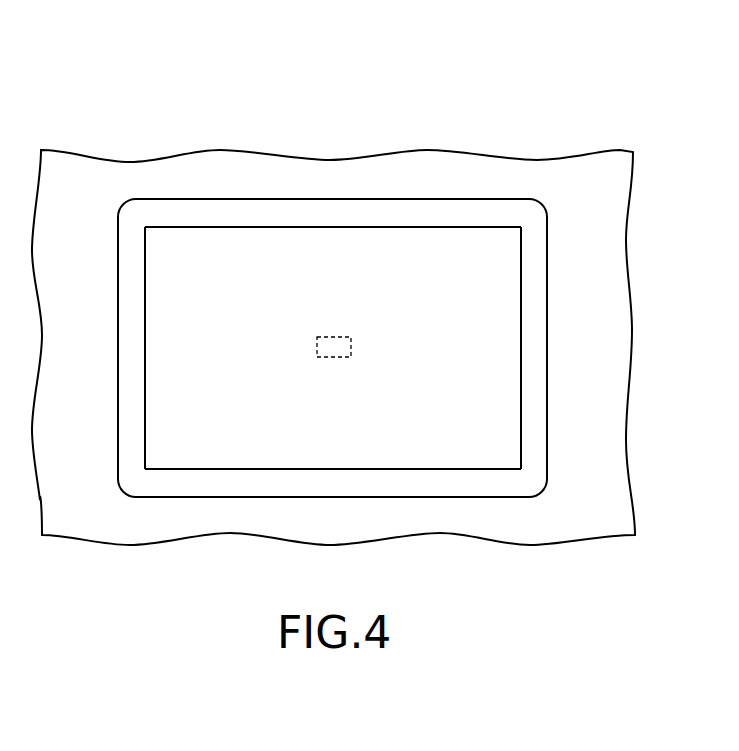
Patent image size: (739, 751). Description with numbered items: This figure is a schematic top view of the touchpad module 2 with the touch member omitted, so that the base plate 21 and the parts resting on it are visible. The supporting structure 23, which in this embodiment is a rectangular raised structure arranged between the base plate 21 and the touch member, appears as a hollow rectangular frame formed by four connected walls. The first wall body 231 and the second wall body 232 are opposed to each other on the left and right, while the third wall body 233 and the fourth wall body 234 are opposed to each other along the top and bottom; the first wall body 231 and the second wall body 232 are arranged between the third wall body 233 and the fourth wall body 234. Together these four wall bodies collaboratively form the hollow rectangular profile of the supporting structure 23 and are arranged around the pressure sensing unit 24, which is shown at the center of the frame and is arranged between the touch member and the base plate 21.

The touchpad module 2 is at (595, 88).
The base plate 21 is at (442, 160).
The supporting structure 23 is at (117, 18).
The first wall body 231 is at (133, 293).
The second wall body 232 is at (533, 375).
The third wall body 233 is at (423, 213).
The fourth wall body 234 is at (332, 482).
The pressure sensing unit 24 is at (335, 343).